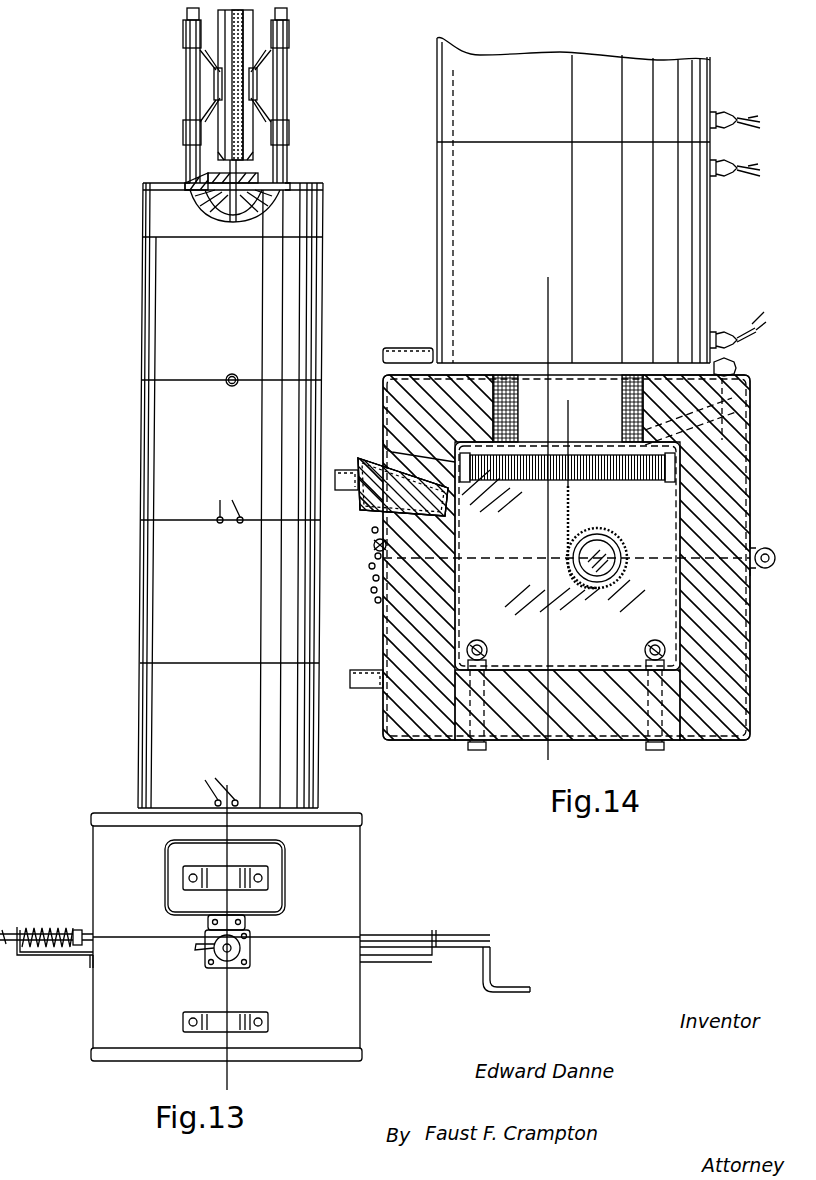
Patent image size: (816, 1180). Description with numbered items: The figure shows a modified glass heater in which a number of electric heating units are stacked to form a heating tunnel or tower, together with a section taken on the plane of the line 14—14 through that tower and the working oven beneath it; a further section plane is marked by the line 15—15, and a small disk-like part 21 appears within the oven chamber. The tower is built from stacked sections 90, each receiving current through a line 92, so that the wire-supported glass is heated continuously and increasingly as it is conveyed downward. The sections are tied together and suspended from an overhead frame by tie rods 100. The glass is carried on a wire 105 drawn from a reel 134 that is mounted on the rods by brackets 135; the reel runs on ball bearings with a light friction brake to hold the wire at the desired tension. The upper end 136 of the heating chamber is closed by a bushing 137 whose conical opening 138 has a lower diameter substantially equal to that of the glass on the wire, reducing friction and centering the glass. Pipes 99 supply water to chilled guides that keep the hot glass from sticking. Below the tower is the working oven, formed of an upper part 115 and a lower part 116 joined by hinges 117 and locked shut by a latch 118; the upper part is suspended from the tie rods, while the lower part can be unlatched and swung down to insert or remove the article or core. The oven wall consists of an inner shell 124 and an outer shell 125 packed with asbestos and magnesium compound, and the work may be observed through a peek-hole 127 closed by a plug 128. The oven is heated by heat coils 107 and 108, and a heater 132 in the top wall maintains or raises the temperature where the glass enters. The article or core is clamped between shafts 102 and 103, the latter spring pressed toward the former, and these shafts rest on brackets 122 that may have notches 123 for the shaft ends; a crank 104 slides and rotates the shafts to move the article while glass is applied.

In FIG. 13, the section line 14— 14 is at (252, 783).
In FIG. 14, the section line 15— 15 is at (538, 281).
In FIG. 14, the disk 21 is at (612, 532).
In FIG. 13, the sections 90 is at (308, 322).
In FIG. 14, the sections 90 is at (696, 90).
In FIG. 14, the line 92 is at (742, 118).
In FIG. 13, the pipes 99 is at (215, 642).
In FIG. 14, the pipes 99 is at (422, 352).
In FIG. 13, the tie rods 100 is at (185, 100).
In FIG. 13, the shaft 102 is at (378, 937).
In FIG. 13, the shaft 103 is at (2, 918).
In FIG. 13, the crank 104 is at (484, 964).
In FIG. 14, the wire 105 is at (570, 421).
In FIG. 14, the heat coil 107 is at (606, 480).
In FIG. 14, the heat coil 108 is at (477, 640).
In FIG. 13, the part 115 is at (100, 870).
In FIG. 14, the part 115 is at (732, 497).
In FIG. 13, the part 116 is at (100, 1012).
In FIG. 14, the part 116 is at (727, 660).
In FIG. 14, the hinges 117 is at (766, 569).
In FIG. 13, the latch 118 is at (212, 955).
In FIG. 14, the latch 118 is at (374, 546).
In FIG. 13, the brackets 122 is at (46, 958).
In FIG. 13, the recesses or notches 123 is at (20, 928).
In FIG. 14, the inner shell 124 is at (740, 430).
In FIG. 14, the outer shell 125 is at (678, 534).
In FIG. 14, the peek-hole 127 is at (386, 450).
In FIG. 13, the plug 128 is at (268, 893).
In FIG. 14, the plug 128 is at (362, 470).
In FIG. 14, the heater 132 is at (512, 412).
In FIG. 13, the reel 134 is at (255, 34).
In FIG. 13, the brackets 135 is at (256, 78).
In FIG. 13, the upper end 136 is at (245, 211).
In FIG. 13, the bushing 137 is at (258, 178).
In FIG. 13, the opening 138 is at (208, 180).